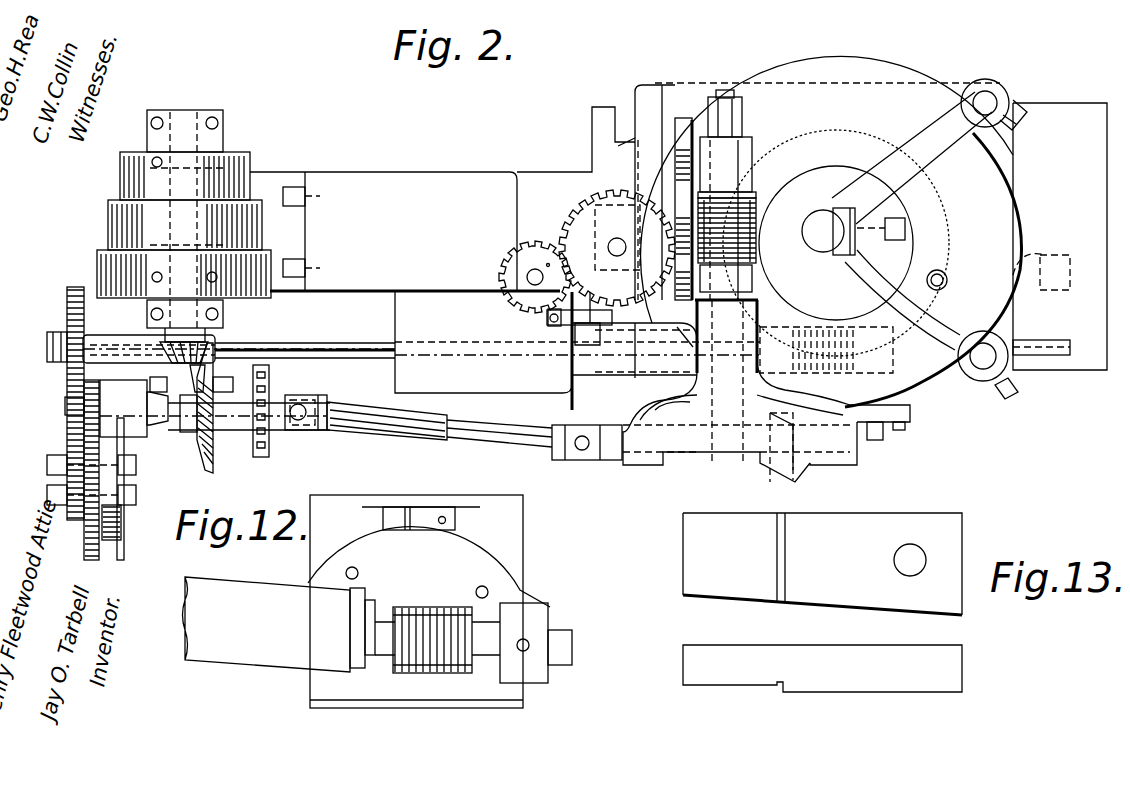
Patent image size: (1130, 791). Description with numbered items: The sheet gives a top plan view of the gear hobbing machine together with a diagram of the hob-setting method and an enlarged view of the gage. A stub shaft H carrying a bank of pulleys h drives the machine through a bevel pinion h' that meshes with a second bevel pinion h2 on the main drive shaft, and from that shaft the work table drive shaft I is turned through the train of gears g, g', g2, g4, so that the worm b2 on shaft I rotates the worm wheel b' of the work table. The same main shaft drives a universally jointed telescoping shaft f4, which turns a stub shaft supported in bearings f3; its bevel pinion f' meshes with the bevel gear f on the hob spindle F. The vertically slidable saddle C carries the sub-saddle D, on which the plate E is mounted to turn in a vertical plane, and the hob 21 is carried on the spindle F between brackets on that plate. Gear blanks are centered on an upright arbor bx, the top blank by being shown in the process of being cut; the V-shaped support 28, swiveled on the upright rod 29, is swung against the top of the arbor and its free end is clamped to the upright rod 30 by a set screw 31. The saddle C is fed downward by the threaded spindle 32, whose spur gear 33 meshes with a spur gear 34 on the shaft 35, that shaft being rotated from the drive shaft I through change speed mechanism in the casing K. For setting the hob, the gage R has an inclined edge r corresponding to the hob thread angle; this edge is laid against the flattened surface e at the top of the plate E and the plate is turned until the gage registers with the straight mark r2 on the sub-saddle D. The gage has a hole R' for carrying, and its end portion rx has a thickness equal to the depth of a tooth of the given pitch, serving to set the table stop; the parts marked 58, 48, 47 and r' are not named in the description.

In FIG. 2, the stub shaft H is at (190, 124).
In FIG. 2, the bank of pulleys h is at (190, 214).
In FIG. 2, the bevel pinion h' is at (211, 353).
In FIG. 2, the second bevel pinion h2 is at (213, 450).
In FIG. 2, the gear g4 is at (67, 300).
In FIG. 2, the gear g is at (53, 470).
In FIG. 2, the gear g' is at (81, 537).
In FIG. 2, the gear g2 is at (47, 493).
In FIG. 2, the sprocket 58 is at (268, 445).
In FIG. 2, the drive shaft I is at (355, 358).
In FIG. 2, the casing K is at (546, 350).
In FIG. 2, the universally jointed telescoping shaft f4 is at (432, 420).
In FIG. 2, the bracket 48 is at (545, 321).
In FIG. 2, the bolt 47 is at (578, 318).
In FIG. 2, the spur gear 34 is at (525, 271).
In FIG. 2, the shaft 35 is at (527, 276).
In FIG. 2, the spur gear 33 is at (578, 234).
In FIG. 2, the threaded spindle 32 is at (616, 240).
In FIG. 2, the saddle C is at (648, 150).
In FIG. 2, the sub-saddle D is at (655, 140).
In FIG. 12, the sub-saddle D is at (510, 532).
In FIG. 2, the plate E is at (685, 118).
In FIG. 12, the plate E is at (429, 567).
In FIG. 2, the hob spindle F is at (744, 129).
In FIG. 12, the hob spindle F is at (482, 660).
In FIG. 2, the flattened surface e is at (686, 230).
In FIG. 12, the flattened surface e is at (430, 530).
In FIG. 2, the hob 21 is at (761, 241).
In FIG. 12, the hob 21 is at (416, 672).
In FIG. 2, the top blank by is at (853, 172).
In FIG. 2, the upright arbor bx is at (820, 228).
In FIG. 2, the upright rod 29 is at (990, 100).
In FIG. 2, the support 28 is at (928, 153).
In FIG. 2, the worm wheel b' is at (831, 231).
In FIG. 2, the worm b2 is at (833, 373).
In FIG. 2, the upright rod 30 is at (980, 368).
In FIG. 2, the set screw 31 is at (1017, 388).
In FIG. 2, the bearings f3 is at (632, 466).
In FIG. 2, the bevel gear f is at (750, 455).
In FIG. 2, the bevel pinion f' is at (766, 463).
In FIG. 12, the gage R is at (421, 498).
In FIG. 13, the gage R is at (822, 603).
In FIG. 12, the straight mark r2 is at (455, 505).
In FIG. 13, the inclined edge r is at (822, 575).
In FIG. 13, the template edge r' is at (810, 501).
In FIG. 13, the end portion rx is at (707, 706).
In FIG. 13, the hole R' is at (949, 553).